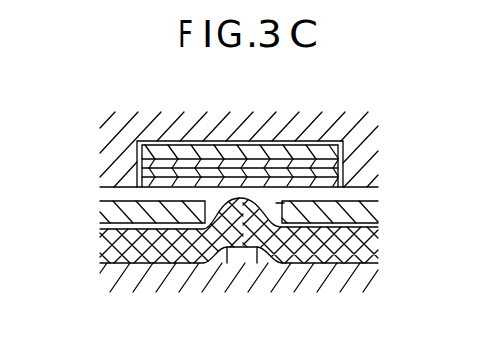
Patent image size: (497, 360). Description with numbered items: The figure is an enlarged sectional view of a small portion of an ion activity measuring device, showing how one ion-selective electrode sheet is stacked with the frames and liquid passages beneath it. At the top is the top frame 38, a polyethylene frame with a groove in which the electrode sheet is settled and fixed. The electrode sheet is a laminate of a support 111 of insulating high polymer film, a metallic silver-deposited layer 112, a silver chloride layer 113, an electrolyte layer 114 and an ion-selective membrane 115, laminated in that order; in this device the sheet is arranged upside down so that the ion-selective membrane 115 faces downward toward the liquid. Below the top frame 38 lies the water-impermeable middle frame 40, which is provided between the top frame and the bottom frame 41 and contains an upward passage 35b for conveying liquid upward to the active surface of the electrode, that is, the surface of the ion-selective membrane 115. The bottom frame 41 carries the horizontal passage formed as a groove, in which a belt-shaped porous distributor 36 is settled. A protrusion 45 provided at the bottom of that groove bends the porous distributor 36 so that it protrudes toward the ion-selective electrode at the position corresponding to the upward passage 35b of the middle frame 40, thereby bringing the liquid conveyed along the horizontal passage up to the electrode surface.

The upward passage 35b is at (278, 203).
The porous distributor 36 is at (365, 242).
The top frame 38 is at (112, 150).
The water-impermeable middle frame 40 is at (100, 215).
The bottom frame 41 is at (370, 284).
The protrusion 45 is at (242, 253).
The support 111 is at (336, 142).
The metallic silver-deposited layer 112 is at (342, 152).
The silver chloride layer 113 is at (340, 163).
The electrolyte layer 114 is at (340, 173).
The ion-selective membrane 115 is at (347, 184).